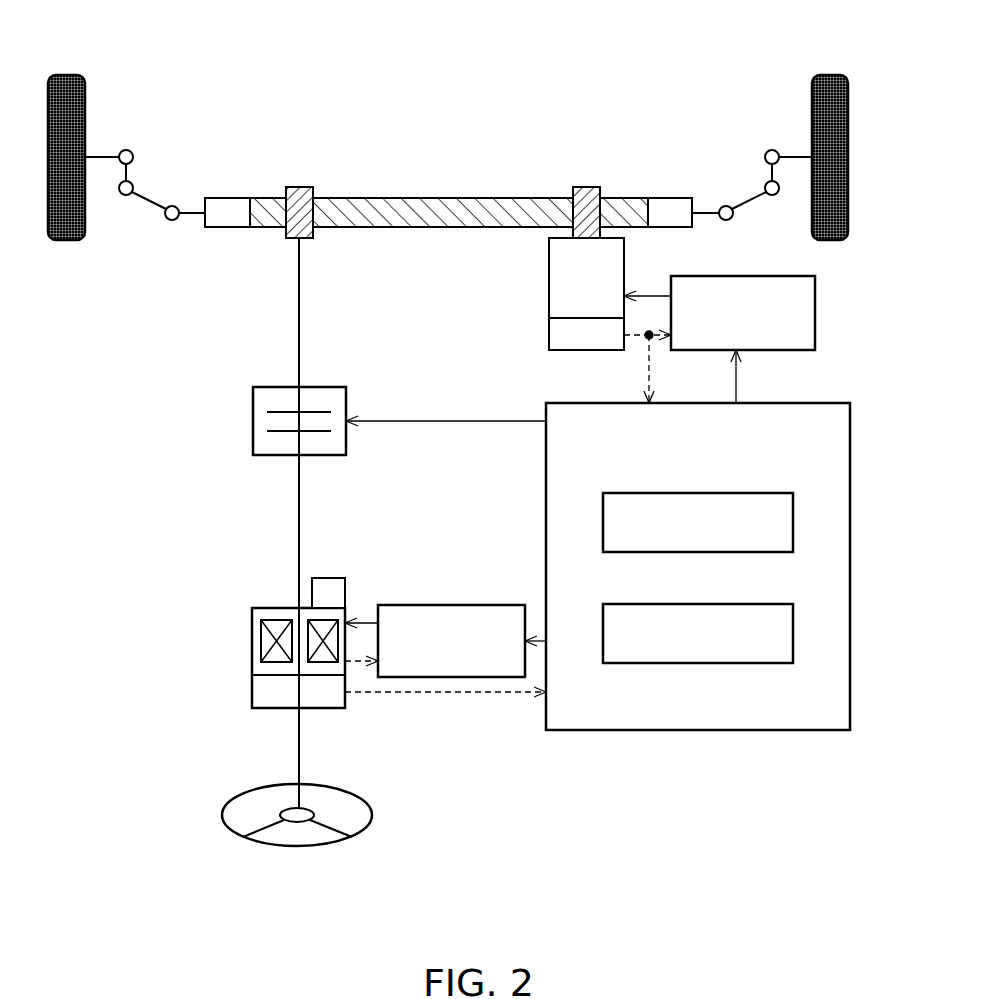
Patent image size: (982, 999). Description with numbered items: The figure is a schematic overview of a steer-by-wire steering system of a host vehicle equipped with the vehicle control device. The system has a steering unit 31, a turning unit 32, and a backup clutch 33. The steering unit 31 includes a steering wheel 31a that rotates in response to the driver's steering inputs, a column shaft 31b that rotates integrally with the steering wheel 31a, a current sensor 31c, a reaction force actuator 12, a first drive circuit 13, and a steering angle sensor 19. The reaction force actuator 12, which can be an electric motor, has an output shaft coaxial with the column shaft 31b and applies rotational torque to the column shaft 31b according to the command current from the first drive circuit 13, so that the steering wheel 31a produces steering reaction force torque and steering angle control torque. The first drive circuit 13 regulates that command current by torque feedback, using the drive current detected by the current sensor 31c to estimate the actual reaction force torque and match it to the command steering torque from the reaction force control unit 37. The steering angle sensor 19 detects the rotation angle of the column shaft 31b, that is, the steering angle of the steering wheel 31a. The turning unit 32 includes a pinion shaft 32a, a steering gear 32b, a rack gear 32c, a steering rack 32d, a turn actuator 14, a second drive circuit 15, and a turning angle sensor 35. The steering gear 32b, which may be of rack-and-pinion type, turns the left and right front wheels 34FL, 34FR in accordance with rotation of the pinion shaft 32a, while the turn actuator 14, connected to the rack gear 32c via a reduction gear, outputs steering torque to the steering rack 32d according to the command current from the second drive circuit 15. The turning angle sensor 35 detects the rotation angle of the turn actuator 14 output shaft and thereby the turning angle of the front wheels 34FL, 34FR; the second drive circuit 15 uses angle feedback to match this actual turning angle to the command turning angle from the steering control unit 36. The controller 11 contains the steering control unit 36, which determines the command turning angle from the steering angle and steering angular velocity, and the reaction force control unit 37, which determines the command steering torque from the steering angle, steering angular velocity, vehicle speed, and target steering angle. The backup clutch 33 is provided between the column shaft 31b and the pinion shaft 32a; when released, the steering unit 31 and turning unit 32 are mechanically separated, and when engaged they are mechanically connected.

The left front wheel 34FL is at (70, 75).
The right front wheel 34FR is at (830, 75).
The turning unit 32 is at (465, 165).
The pinion shaft 32a is at (299, 308).
The steering gear 32b is at (298, 187).
The rack gear 32c is at (540, 198).
The steering rack 32d is at (670, 198).
The turn actuator 14 is at (556, 294).
The turning angle sensor 35 is at (549, 335).
The second drive circuit 15 is at (765, 276).
The controller 11 is at (699, 541).
The backup clutch 33 is at (253, 421).
The steering control unit 36 is at (765, 493).
The reaction force control unit 37 is at (765, 604).
The reaction force actuator 12 is at (252, 630).
The current sensor 31c is at (326, 578).
The first drive circuit 13 is at (475, 605).
The steering angle sensor 19 is at (275, 708).
The steering unit 31 is at (333, 716).
The column shaft 31b is at (299, 750).
The steering wheel 31a is at (262, 846).